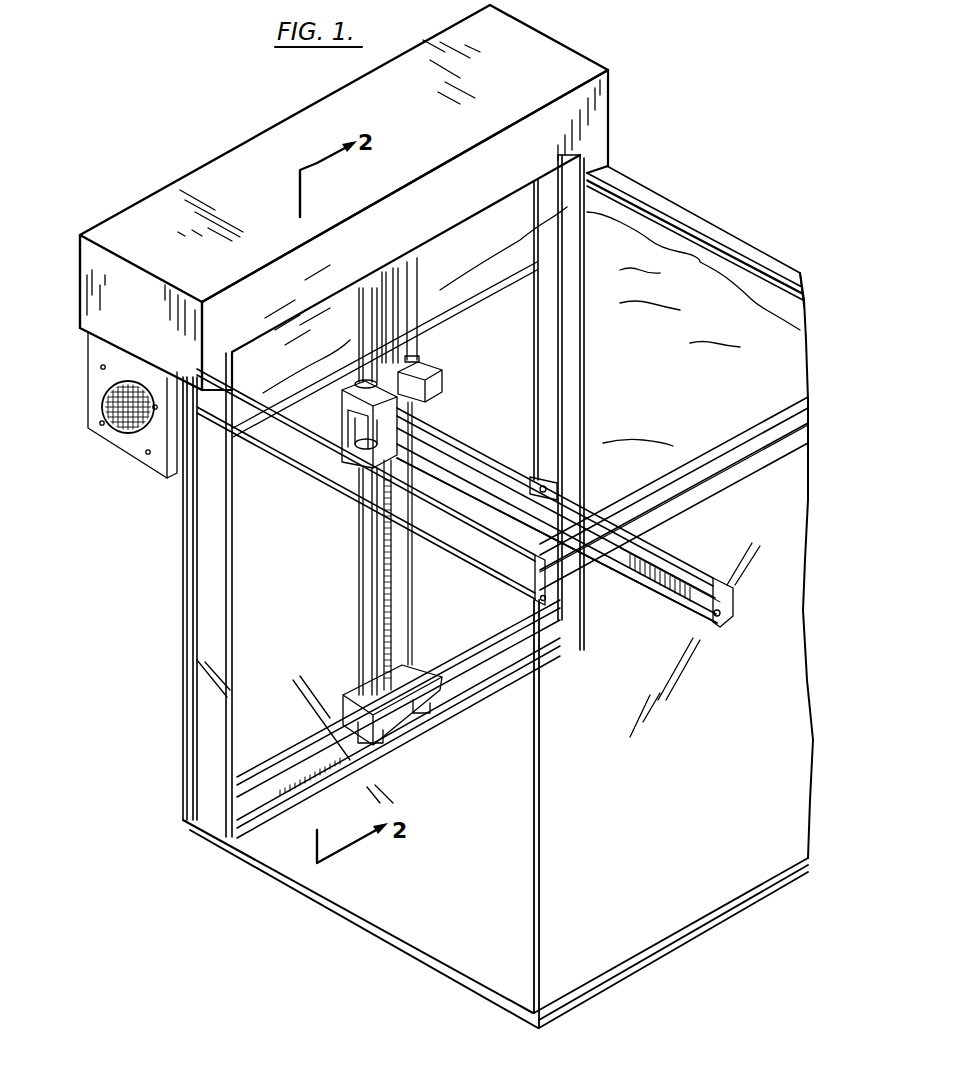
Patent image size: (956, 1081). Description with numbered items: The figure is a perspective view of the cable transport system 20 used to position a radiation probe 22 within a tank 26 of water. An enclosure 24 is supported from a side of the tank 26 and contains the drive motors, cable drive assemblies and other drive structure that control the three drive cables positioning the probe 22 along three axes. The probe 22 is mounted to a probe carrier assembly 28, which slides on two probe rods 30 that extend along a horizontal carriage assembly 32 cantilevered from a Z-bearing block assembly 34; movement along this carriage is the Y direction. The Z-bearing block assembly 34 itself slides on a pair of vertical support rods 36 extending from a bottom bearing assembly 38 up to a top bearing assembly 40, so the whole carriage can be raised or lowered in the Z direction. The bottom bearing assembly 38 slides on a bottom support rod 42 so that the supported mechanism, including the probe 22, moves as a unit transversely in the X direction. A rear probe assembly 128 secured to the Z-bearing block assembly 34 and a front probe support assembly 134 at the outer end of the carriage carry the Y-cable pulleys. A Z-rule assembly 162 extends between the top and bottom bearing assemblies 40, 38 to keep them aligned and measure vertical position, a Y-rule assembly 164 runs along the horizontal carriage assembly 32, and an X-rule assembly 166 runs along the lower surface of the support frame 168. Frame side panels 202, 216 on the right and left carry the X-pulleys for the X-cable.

The cable transport system 20 is at (664, 137).
The radiation probe 22 is at (560, 448).
The enclosure 24 is at (572, 58).
The tank 26 is at (405, 935).
The probe carrier assembly 28 is at (560, 479).
The probe rods 30 is at (688, 566).
The horizontal carriage assembly 32 is at (637, 600).
The Z-bearing block assembly 34 is at (328, 432).
The vertical support rods 36 is at (372, 611).
The bottom bearing assembly 38 is at (348, 686).
The top bearing assembly 40 is at (436, 257).
The bottom support rod 42 is at (274, 766).
The rear probe assembly 128 is at (412, 405).
The front probe support assembly 134 is at (737, 603).
The Z-rule assembly 162 is at (395, 592).
The Y-rule assembly 164 is at (660, 597).
The X-rule assembly 166 is at (333, 782).
The support frame 168 is at (420, 732).
The frame side panel 202 is at (566, 342).
The frame side panel 216 is at (195, 604).